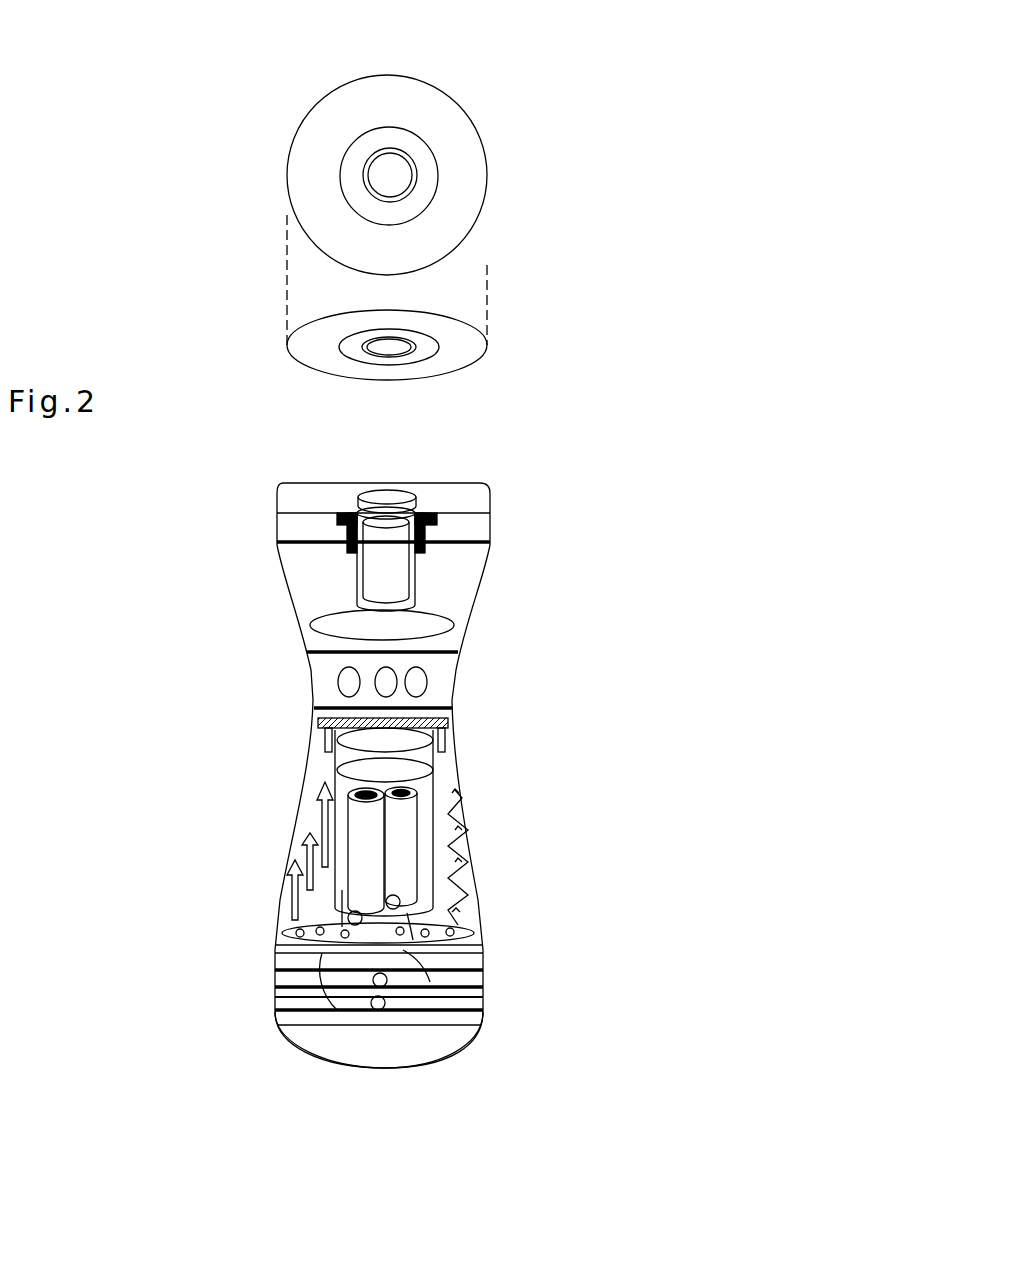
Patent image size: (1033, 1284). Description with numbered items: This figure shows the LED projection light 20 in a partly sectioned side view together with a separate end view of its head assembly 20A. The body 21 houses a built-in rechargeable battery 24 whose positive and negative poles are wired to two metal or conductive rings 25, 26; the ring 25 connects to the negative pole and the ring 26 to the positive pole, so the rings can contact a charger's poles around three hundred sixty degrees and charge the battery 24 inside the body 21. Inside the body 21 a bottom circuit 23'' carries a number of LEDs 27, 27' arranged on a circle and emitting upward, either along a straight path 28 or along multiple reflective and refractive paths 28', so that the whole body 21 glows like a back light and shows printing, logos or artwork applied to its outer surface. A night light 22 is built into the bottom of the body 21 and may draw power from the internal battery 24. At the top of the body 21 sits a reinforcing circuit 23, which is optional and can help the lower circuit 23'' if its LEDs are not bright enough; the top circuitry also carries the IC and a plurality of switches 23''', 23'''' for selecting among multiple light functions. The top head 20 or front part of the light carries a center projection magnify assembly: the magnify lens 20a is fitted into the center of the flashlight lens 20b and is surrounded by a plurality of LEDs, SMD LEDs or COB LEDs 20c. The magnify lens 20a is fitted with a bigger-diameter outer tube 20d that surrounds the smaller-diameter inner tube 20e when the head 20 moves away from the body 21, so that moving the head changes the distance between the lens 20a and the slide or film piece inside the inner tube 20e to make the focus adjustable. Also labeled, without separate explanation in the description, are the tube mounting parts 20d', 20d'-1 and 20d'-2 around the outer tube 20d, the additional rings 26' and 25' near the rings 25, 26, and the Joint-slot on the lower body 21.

The lamp holder assembly 20A is at (305, 98).
The magnify lens 20a is at (382, 172).
The flashlight lens 20b is at (313, 176).
The LEDs 20c is at (356, 197).
The top head 20 is at (495, 497).
The retaining blocks 20d' is at (560, 492).
The outer tube 20d is at (564, 559).
The inner tube 20e is at (400, 583).
The circuit 23 is at (526, 648).
The switch 23''' is at (246, 688).
The switch 23'''' is at (587, 703).
The support plate 20d'-1 is at (554, 757).
The support post 20d'-2 is at (207, 755).
The rechargeable battery 24 is at (430, 770).
The straight light path 28 is at (271, 847).
The reflective and refractive path 28' is at (592, 857).
The LEDs 27' is at (254, 876).
The bottom circuit 23'' is at (267, 912).
The upper ring 26' is at (265, 957).
The joint slot Joint-slot is at (482, 957).
The ring 25 is at (269, 1007).
The ring 25' is at (508, 1046).
The ring 26 is at (266, 1048).
The LEDs 27 is at (527, 980).
The body 21 is at (487, 903).
The night light 22 is at (357, 1058).